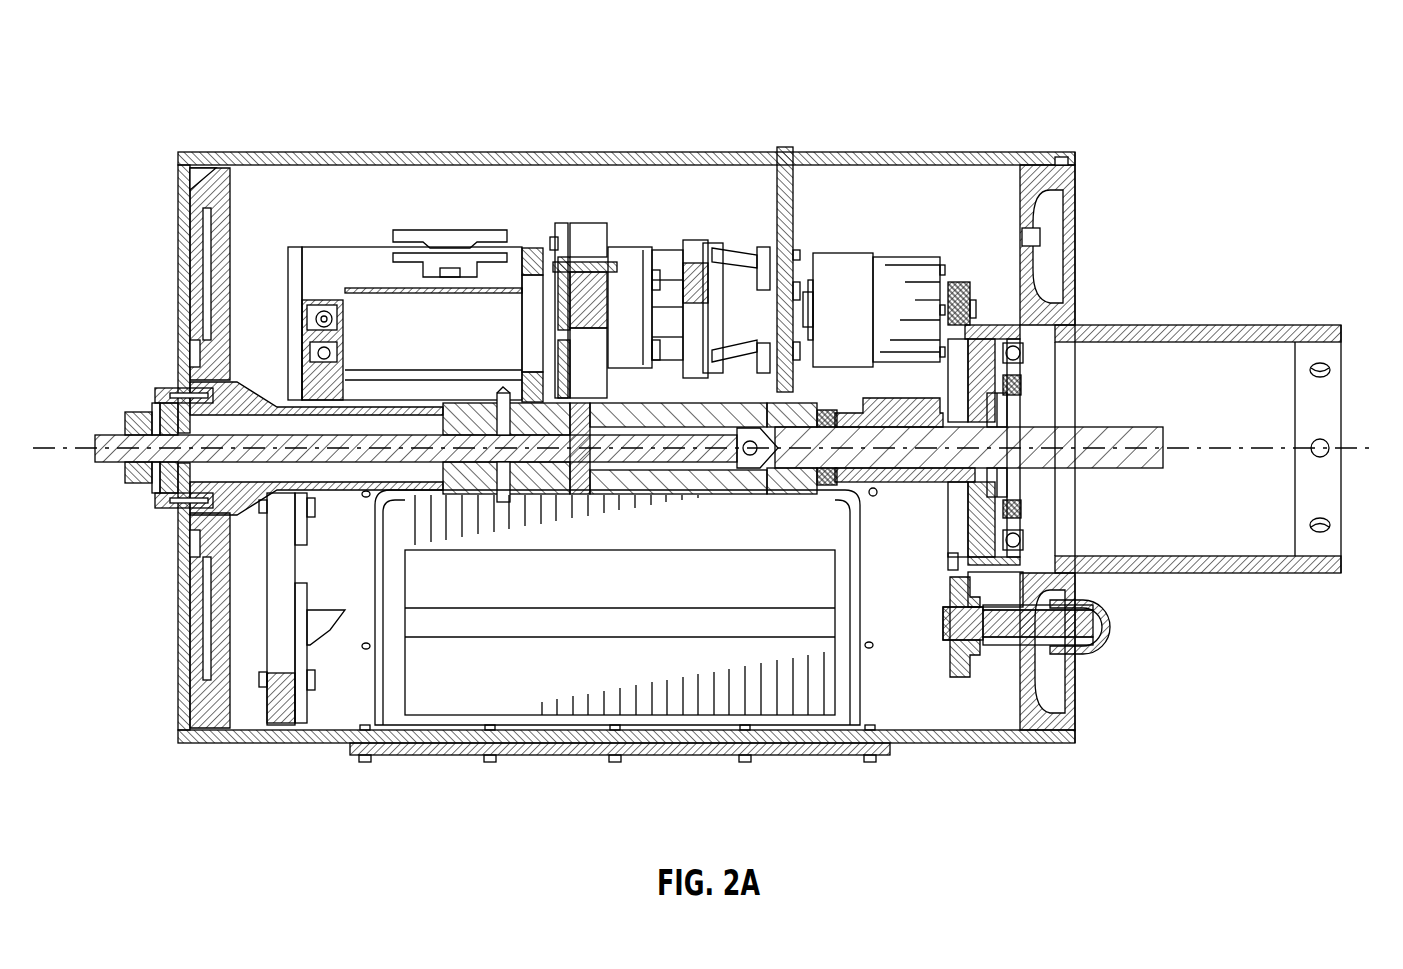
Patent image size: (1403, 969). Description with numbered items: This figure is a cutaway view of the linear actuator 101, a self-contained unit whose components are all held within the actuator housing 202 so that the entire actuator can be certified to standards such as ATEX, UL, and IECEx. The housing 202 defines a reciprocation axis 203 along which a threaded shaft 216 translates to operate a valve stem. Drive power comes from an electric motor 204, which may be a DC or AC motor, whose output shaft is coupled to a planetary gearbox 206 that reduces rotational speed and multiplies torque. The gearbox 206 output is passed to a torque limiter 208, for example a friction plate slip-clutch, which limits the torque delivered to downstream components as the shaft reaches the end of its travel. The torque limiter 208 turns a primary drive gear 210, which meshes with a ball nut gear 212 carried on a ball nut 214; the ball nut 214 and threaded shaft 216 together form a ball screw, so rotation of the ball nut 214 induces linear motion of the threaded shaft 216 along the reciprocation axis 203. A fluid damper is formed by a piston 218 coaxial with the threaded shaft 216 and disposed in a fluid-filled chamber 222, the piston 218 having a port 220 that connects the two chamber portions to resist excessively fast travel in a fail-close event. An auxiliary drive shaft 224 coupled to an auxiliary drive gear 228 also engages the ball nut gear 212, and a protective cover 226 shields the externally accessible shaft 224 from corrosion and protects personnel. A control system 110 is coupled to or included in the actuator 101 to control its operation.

The linear actuator 101 is at (141, 94).
The actuator housing 202 is at (918, 152).
The reciprocation axis 203 is at (1350, 448).
The electric motor 204 is at (372, 252).
The planetary gearbox 206 is at (590, 226).
The torque limiter 208 is at (845, 253).
The primary drive gear 210 is at (958, 282).
The ball nut gear 212 is at (1058, 322).
The ball nut 214 is at (883, 398).
The threaded shaft 216 is at (1095, 428).
The piston 218 is at (362, 420).
The port 220 is at (452, 405).
The chamber 222 is at (165, 495).
The auxiliary drive shaft 224 is at (1113, 612).
The protective cover 226 is at (1105, 650).
The auxiliary drive gear 228 is at (957, 678).
The control system 110 is at (705, 547).